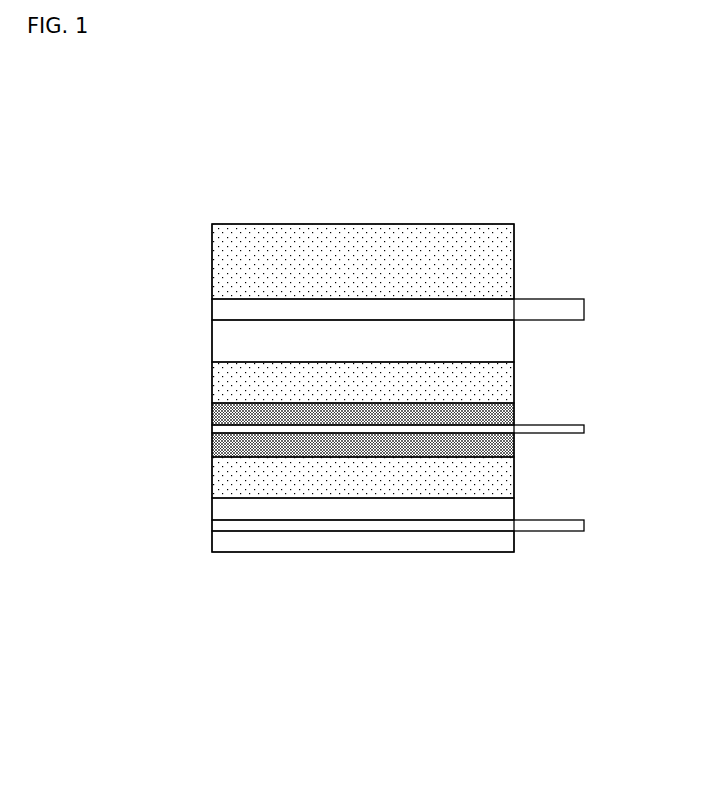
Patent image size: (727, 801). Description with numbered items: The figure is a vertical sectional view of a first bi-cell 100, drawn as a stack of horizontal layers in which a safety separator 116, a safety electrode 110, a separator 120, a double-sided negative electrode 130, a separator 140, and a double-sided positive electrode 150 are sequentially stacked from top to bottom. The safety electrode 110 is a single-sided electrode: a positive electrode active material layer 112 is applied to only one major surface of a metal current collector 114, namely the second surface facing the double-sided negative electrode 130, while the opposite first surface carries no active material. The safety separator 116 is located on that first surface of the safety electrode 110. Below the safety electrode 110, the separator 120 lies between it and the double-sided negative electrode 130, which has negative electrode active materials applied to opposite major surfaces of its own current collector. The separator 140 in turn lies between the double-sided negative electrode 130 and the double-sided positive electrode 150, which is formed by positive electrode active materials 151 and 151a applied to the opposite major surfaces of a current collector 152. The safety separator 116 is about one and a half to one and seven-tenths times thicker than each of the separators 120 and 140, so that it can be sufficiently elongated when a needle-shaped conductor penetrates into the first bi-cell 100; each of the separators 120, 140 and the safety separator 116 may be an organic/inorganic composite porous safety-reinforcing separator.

The first bi-cell 100 is at (250, 140).
The safety electrode 110 is at (79, 232).
The safety separator 116 is at (212, 271).
The metal current collector 114 is at (212, 310).
The positive electrode active material layer 112 is at (212, 344).
The separator 120 is at (514, 381).
The double-sided negative electrode 130 is at (202, 406).
The separator 140 is at (514, 477).
The double-sided positive electrode 150 is at (115, 667).
The positive electrode active material 151 is at (212, 511).
The current collector 152 is at (212, 525).
The positive electrode active material 151a is at (222, 552).